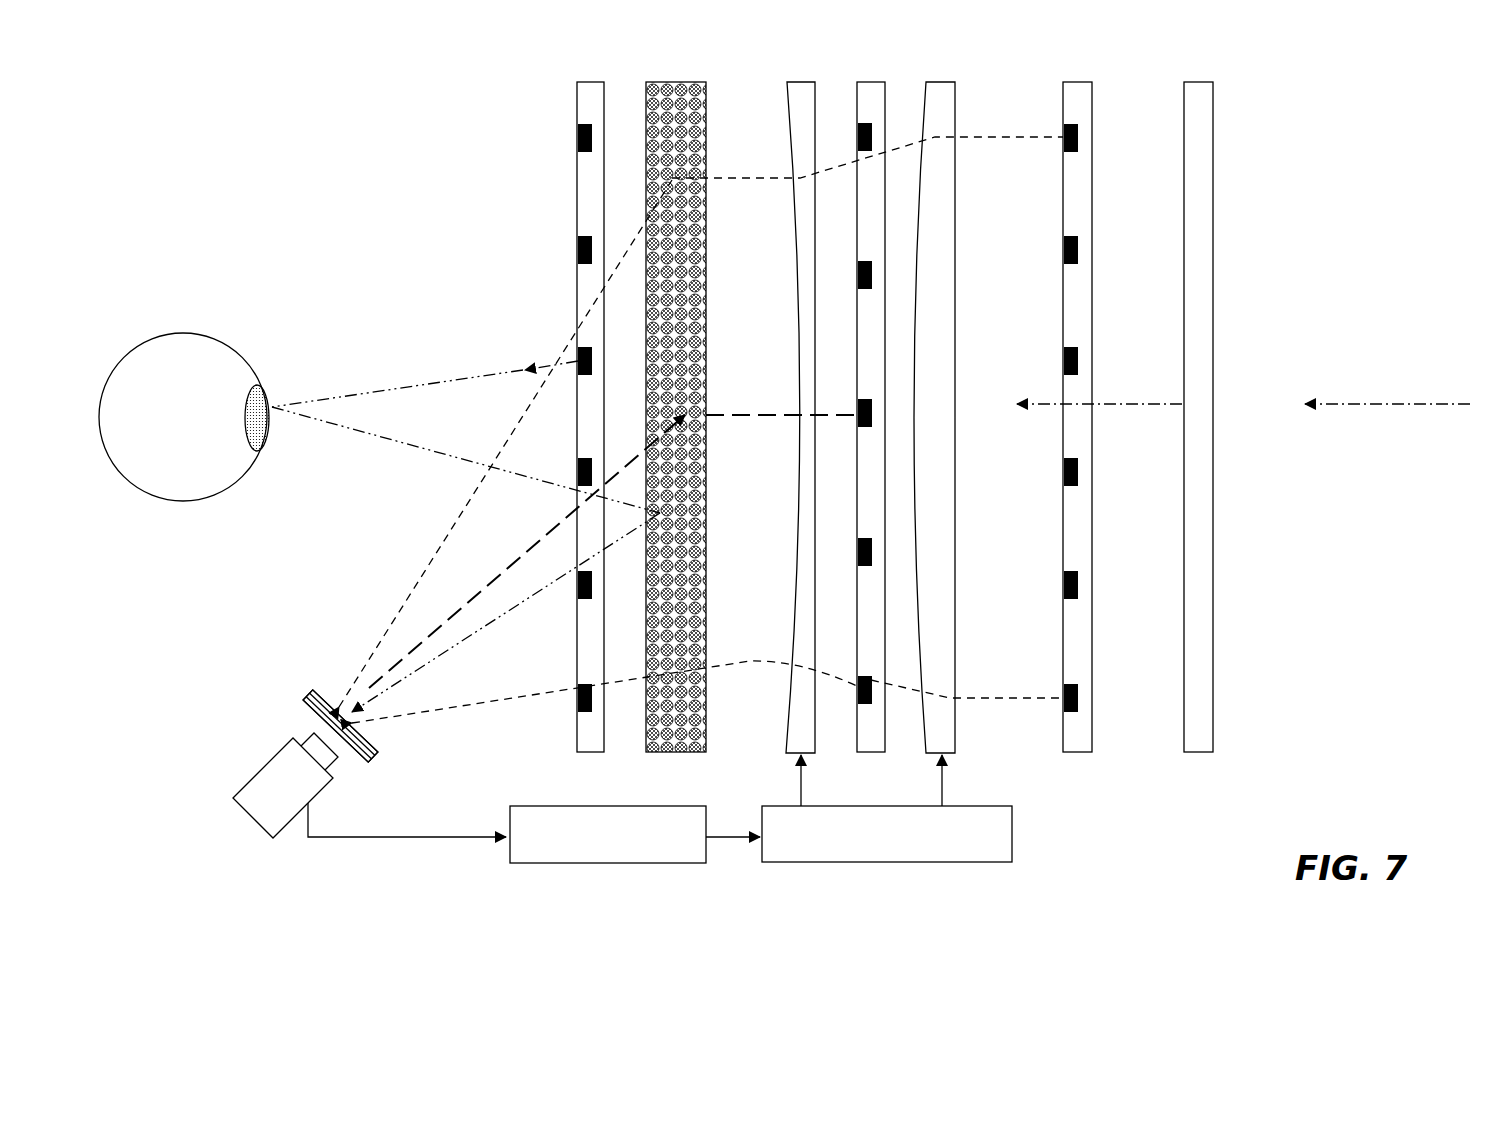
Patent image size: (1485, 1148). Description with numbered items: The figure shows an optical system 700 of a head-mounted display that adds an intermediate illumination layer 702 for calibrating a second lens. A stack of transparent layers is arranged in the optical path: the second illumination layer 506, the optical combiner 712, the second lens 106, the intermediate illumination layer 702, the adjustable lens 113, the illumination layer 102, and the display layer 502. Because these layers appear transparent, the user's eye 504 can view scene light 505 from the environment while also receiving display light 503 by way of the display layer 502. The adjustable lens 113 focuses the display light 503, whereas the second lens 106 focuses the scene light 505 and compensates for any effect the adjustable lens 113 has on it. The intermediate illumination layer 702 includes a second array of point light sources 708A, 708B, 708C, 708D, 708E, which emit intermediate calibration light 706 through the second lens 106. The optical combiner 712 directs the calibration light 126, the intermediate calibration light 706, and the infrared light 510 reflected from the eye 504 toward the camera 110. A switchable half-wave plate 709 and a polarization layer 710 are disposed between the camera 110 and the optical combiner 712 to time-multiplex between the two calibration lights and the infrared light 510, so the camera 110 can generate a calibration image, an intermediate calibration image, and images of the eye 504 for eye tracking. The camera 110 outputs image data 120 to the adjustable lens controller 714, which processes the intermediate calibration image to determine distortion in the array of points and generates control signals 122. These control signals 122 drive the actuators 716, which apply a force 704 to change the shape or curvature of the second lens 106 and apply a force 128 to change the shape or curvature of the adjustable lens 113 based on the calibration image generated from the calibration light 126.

The optical system 700 is at (1385, 135).
The second illumination layer 506 is at (618, 398).
The optical combiner 712 is at (696, 398).
The second lens 106 is at (832, 398).
The intermediate illumination layer 702 is at (902, 398).
The point light source 708A is at (857, 138).
The point light source 708B is at (857, 275).
The point light source 708C is at (857, 423).
The point light source 708D is at (857, 562).
The point light source 708E is at (857, 698).
The adjustable lens 113 is at (964, 398).
The illumination layer 102 is at (1110, 398).
The display layer 502 is at (1227, 398).
The eye 504 is at (191, 401).
The infrared light 510 is at (420, 383).
The intermediate calibration light 706 is at (748, 362).
The calibration light 126 is at (967, 700).
The display light 503 is at (1099, 345).
The scene light 505 is at (1387, 345).
The camera 110 is at (258, 790).
The switchable half-wave plate 709 is at (325, 697).
The polarization layer 710 is at (315, 710).
The image data 120 is at (415, 837).
The adjustable lens controller 714 is at (639, 822).
The control signals 122 is at (723, 837).
The actuators 716 is at (1012, 833).
The force 704 is at (801, 790).
The force 128 is at (945, 787).